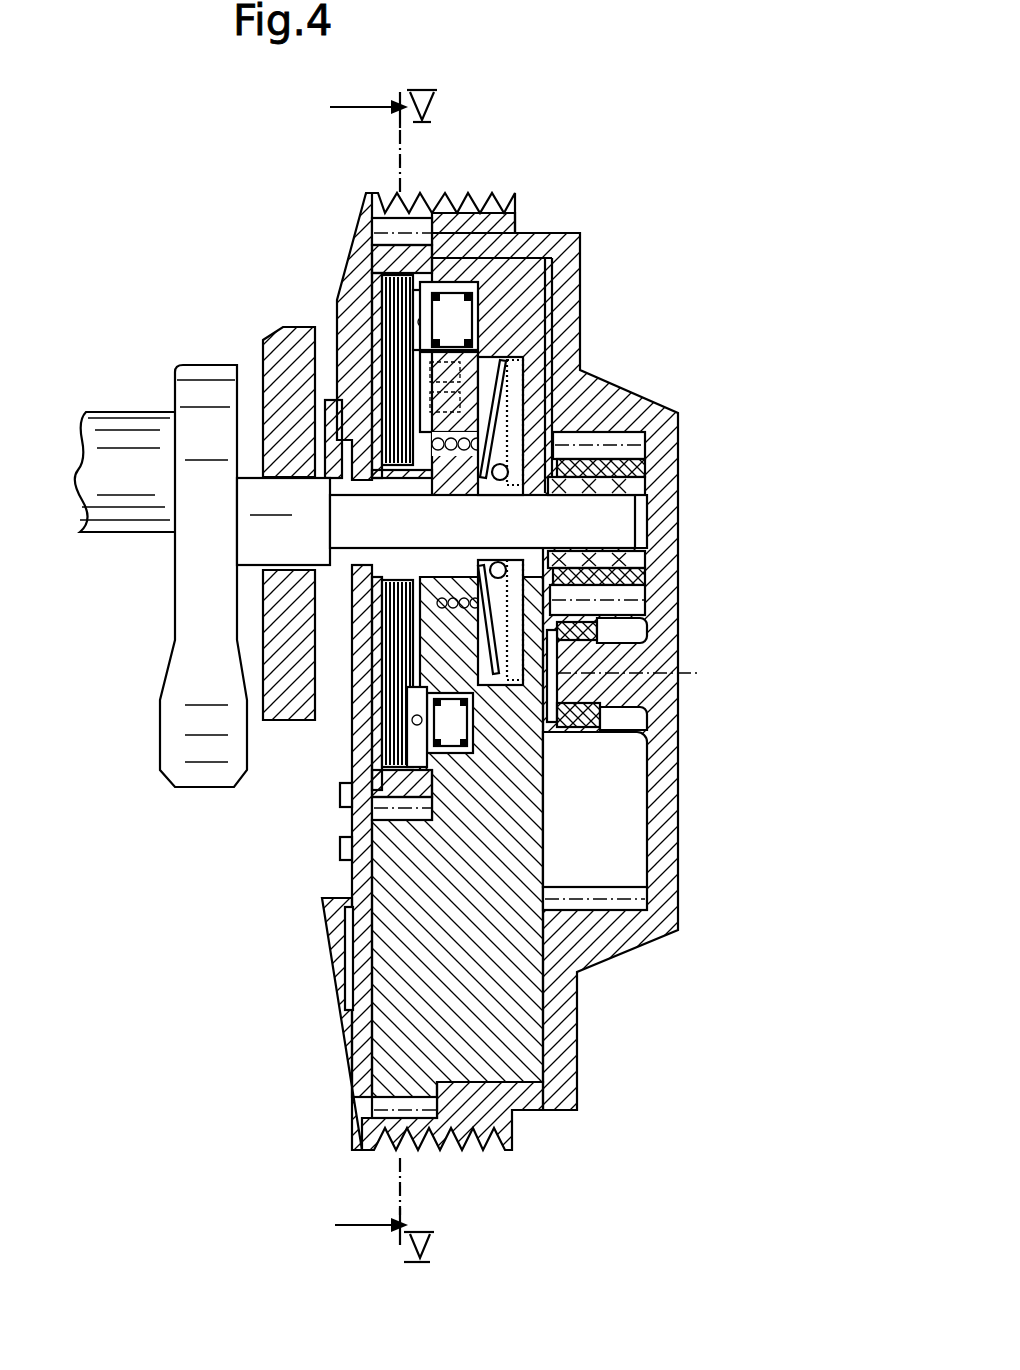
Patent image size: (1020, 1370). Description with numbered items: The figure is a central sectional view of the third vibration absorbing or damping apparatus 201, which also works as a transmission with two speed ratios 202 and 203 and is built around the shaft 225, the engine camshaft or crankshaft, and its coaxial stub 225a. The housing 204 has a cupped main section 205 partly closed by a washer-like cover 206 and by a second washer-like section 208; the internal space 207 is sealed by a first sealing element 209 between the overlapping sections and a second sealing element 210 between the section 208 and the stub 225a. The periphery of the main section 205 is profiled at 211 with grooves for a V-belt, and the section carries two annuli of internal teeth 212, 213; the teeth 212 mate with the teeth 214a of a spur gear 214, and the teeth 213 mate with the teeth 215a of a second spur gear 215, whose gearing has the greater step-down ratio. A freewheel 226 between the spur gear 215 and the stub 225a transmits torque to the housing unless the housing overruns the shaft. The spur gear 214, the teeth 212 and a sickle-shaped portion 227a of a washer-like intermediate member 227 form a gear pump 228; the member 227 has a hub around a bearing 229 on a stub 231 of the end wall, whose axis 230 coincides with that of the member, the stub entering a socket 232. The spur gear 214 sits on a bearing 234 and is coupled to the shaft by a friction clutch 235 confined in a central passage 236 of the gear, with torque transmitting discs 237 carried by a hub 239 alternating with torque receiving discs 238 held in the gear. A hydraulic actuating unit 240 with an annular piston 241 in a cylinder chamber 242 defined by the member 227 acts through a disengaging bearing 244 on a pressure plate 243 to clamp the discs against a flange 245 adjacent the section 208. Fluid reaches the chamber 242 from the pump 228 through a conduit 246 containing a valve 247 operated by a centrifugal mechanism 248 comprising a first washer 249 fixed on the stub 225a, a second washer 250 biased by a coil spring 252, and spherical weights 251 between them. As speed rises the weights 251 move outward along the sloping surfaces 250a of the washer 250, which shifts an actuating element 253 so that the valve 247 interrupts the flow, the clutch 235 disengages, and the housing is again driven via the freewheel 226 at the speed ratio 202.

The vibration absorbing or damping apparatus 201 is at (560, 185).
The speed ratio 202 is at (650, 408).
The speed ratio 203 is at (340, 213).
The housing 204 is at (563, 1092).
The cupped main section 205 is at (565, 1020).
The cover 206 is at (342, 1030).
The internal space 207 is at (620, 788).
The second washer-like section 208 is at (353, 877).
The first sealing element 209 is at (322, 920).
The second sealing element 210 is at (352, 560).
The profiled portion 211 is at (467, 210).
The internal teeth 212 is at (373, 1110).
The internal teeth 213 is at (630, 905).
The spur gear 214 is at (352, 257).
The teeth 214a is at (372, 818).
The second spur gear 215 is at (610, 582).
The teeth 215a is at (592, 612).
The shaft 225 is at (253, 550).
The stub 225a is at (612, 520).
The freewheel 226 is at (555, 487).
The washer-like intermediate member 227 is at (510, 1050).
The sickle-shaped portion 227a is at (403, 1047).
The gear pump 228 is at (462, 252).
The bearing 229 is at (607, 714).
The axis 230 is at (655, 676).
The stub 231 is at (600, 662).
The socket 232 is at (603, 712).
The bearing 234 is at (395, 475).
The friction clutch 235 is at (350, 297).
The central circular passage 236 is at (405, 660).
The torque transmitting discs 237 is at (400, 636).
The torque receiving discs 238 is at (368, 800).
The hub 239 is at (430, 543).
The hydraulic actuating unit 240 is at (505, 292).
The annular piston 241 is at (530, 762).
The cylinder chamber 242 is at (527, 730).
The pressure plate 243 is at (385, 748).
The disengaging bearing 244 is at (400, 710).
The flange 245 is at (395, 312).
The conduit 246 is at (488, 345).
The valve 247 is at (525, 400).
The centrifugal mechanism 248 is at (560, 445).
The first washer 249 is at (605, 440).
The second washer 250 is at (493, 560).
The sloping surfaces 250a is at (580, 630).
The spherical weights 251 is at (585, 463).
The coil spring 252 is at (430, 437).
The actuating element 253 is at (512, 455).